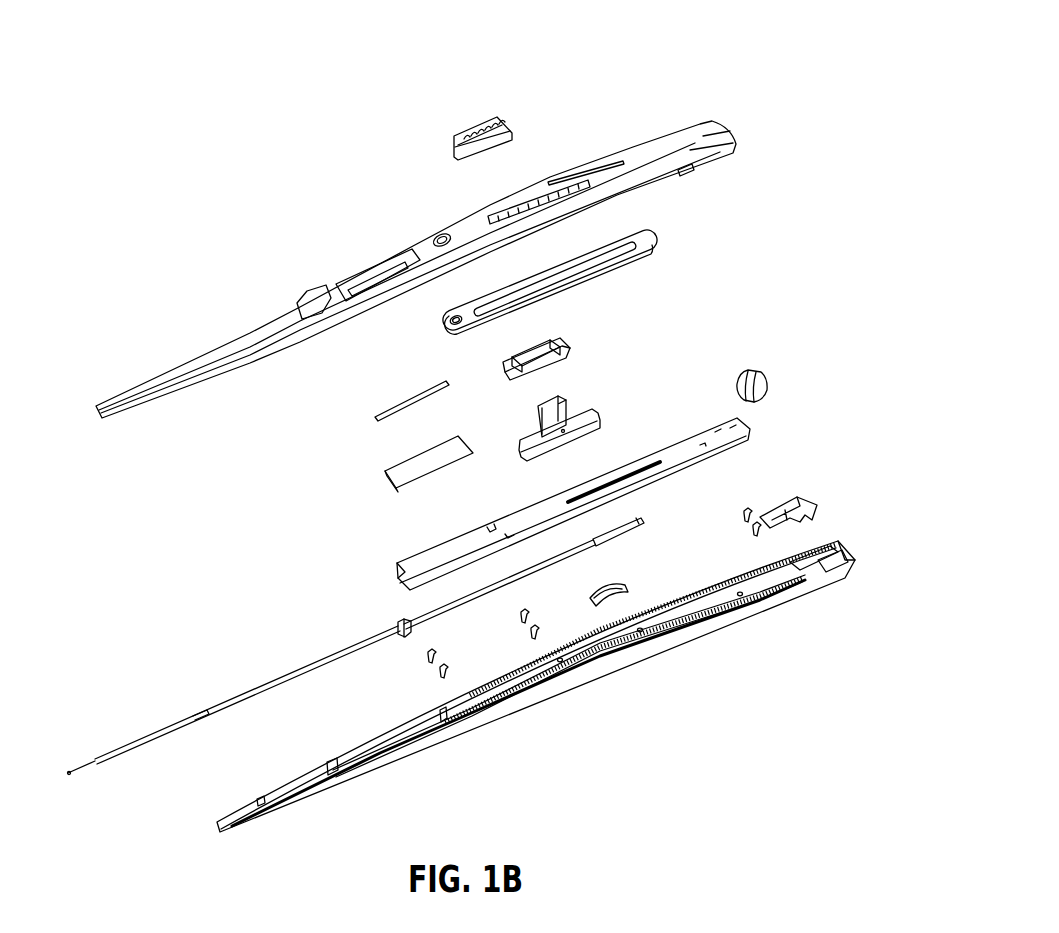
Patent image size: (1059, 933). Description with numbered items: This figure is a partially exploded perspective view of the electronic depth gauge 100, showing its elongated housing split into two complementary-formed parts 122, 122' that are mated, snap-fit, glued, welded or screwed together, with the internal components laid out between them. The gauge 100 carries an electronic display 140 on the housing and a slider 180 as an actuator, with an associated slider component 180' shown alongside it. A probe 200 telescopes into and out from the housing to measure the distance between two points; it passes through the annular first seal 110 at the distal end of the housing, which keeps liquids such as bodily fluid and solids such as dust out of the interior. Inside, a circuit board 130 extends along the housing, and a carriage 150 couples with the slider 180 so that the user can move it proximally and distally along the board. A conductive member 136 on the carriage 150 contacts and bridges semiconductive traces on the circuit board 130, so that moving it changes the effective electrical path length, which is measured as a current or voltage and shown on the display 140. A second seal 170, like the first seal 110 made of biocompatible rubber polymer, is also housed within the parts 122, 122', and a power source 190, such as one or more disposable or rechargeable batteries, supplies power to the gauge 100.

The electronic depth gauge 100 is at (742, 61).
The first seal 110 is at (398, 622).
The housing part 122 is at (416, 252).
The housing part 122' is at (536, 686).
The circuit board 130 is at (637, 460).
The conductive member 136 is at (637, 587).
The electronic display 140 is at (378, 475).
The carriage 150 is at (604, 413).
The second seal 170 is at (664, 247).
The slider 180 is at (478, 121).
The button insert 180' is at (557, 340).
The power source 190 is at (746, 367).
The probe 200 is at (173, 723).